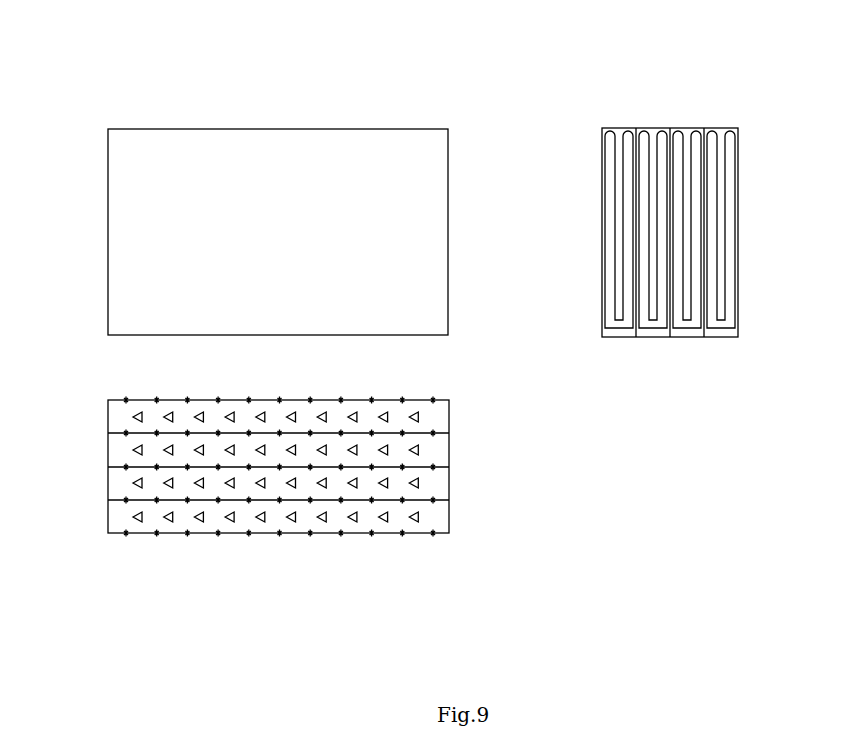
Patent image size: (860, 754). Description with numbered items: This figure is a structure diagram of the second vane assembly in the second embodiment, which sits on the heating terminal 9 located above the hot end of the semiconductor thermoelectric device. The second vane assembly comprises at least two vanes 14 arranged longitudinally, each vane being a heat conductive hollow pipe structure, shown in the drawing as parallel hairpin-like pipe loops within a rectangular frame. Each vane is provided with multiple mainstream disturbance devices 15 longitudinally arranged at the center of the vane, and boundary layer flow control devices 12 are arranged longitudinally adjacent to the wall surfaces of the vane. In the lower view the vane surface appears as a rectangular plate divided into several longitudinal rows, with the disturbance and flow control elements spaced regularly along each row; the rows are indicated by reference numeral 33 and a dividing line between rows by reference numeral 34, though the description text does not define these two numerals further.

The heating terminal 9 is at (353, 128).
The boundary layer flow control device 12 is at (732, 232).
The vane 14 is at (627, 127).
The mainstream disturbance device 15 is at (728, 127).
The row 33 is at (117, 455).
The separating line 34 is at (144, 502).